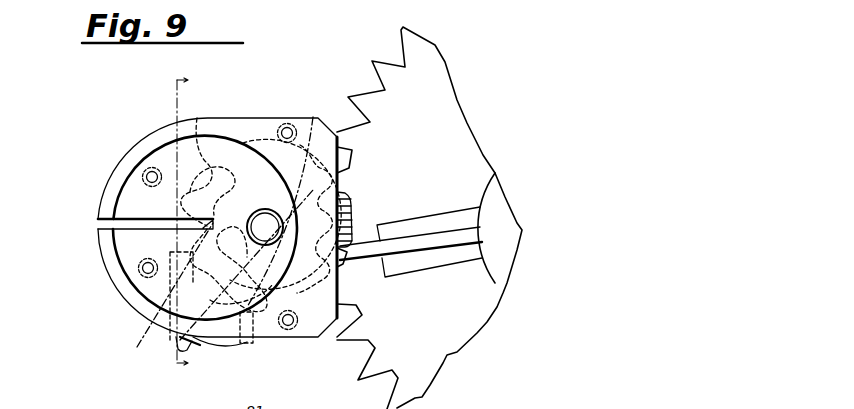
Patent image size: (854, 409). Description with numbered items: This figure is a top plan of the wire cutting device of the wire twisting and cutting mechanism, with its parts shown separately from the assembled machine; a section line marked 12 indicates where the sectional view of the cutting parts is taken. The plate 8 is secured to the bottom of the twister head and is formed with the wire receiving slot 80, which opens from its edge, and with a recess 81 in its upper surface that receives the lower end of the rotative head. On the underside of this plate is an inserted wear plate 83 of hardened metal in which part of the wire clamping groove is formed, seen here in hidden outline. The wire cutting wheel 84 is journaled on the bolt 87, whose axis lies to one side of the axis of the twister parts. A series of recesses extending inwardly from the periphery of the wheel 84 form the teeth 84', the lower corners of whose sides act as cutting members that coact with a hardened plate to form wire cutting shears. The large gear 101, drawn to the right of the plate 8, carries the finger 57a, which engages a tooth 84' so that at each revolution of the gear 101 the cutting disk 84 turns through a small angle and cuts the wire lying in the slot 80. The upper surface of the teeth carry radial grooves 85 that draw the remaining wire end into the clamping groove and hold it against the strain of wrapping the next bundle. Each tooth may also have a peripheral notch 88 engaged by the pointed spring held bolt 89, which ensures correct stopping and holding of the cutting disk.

The plate 8 is at (163, 132).
The section line 12- 12 is at (175, 225).
The finger 57a is at (362, 258).
The wire receiving slot 80 is at (98, 229).
The recess 81 is at (123, 248).
The wear plate 83 is at (220, 273).
The wire cutting wheel 84 is at (285, 197).
The teeth 84' is at (221, 215).
The radial grooves 85 is at (350, 205).
The bolt 87 is at (265, 210).
The peripheral notch 88 is at (354, 224).
The spring held bolt 89 is at (243, 344).
The gear 101 is at (429, 218).